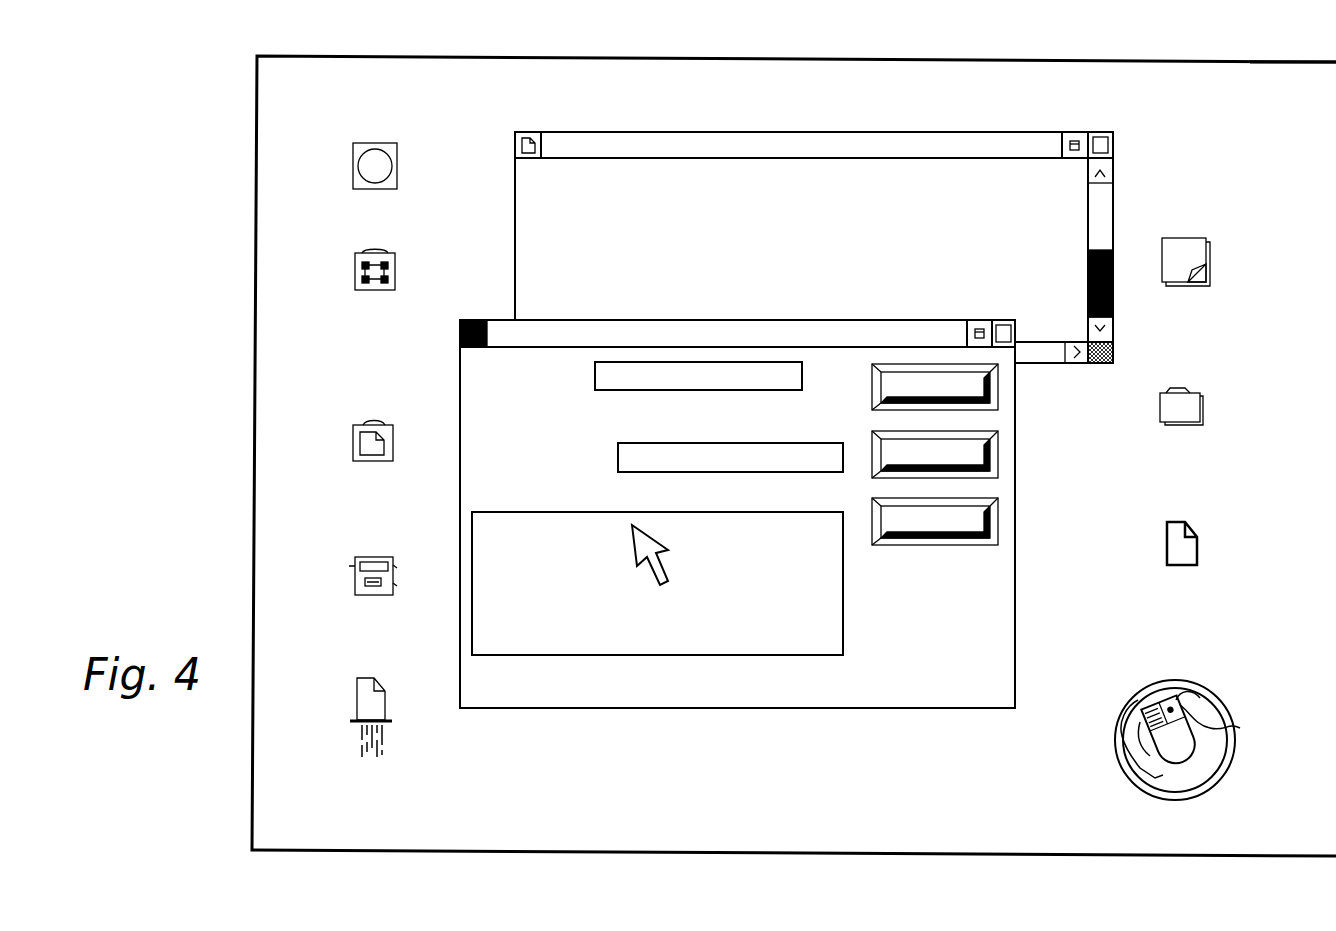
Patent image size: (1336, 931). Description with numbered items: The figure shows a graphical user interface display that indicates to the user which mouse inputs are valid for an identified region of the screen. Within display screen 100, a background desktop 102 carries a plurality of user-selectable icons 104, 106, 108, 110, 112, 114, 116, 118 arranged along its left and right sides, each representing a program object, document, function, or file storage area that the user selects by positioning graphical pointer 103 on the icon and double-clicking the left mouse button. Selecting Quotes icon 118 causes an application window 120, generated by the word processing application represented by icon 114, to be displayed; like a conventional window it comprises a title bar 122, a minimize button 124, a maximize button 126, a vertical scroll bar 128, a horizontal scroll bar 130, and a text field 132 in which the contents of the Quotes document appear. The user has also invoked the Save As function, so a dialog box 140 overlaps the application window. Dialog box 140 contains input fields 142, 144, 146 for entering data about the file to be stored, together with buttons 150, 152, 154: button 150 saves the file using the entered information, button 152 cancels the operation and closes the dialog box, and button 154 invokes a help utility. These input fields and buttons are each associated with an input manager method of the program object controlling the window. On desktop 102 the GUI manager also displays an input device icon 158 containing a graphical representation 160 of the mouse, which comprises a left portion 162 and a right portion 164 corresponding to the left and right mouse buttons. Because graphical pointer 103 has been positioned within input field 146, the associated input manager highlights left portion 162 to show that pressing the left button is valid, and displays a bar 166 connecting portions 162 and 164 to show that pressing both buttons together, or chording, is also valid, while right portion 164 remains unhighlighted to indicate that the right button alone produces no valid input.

The display screen 100 is at (339, 57).
The background desktop 102 is at (1270, 78).
The graphical pointer 103 is at (636, 560).
The user-selectable icon 104 is at (353, 157).
The user-selectable icon 106 is at (355, 272).
The user-selectable icon 108 is at (353, 440).
The user-selectable icon 110 is at (353, 583).
The user-selectable icon 112 is at (355, 706).
The word processing application icon 114 is at (1210, 266).
The user-selectable icon 116 is at (1200, 412).
The Quotes icon 118 is at (1197, 552).
The application window 120 is at (627, 132).
The title bar 122 is at (853, 257).
The minimize button 124 is at (1072, 148).
The maximize button 126 is at (1104, 142).
The vertical scroll bar 128 is at (1130, 260).
The horizontal scroll bar 130 is at (1057, 363).
The text field 132 is at (1070, 218).
The dialog box 140 is at (737, 514).
The input field 142 is at (757, 391).
The input field 144 is at (663, 443).
The input field 146 is at (843, 600).
The save button 150 is at (872, 402).
The cancel button 152 is at (998, 455).
The help button 154 is at (998, 522).
The input device icon 158 is at (1175, 716).
The graphical representation of mouse 160 is at (1118, 752).
The left portion 162 is at (1143, 710).
The right portion 164 is at (1203, 705).
The bar 166 is at (1237, 730).